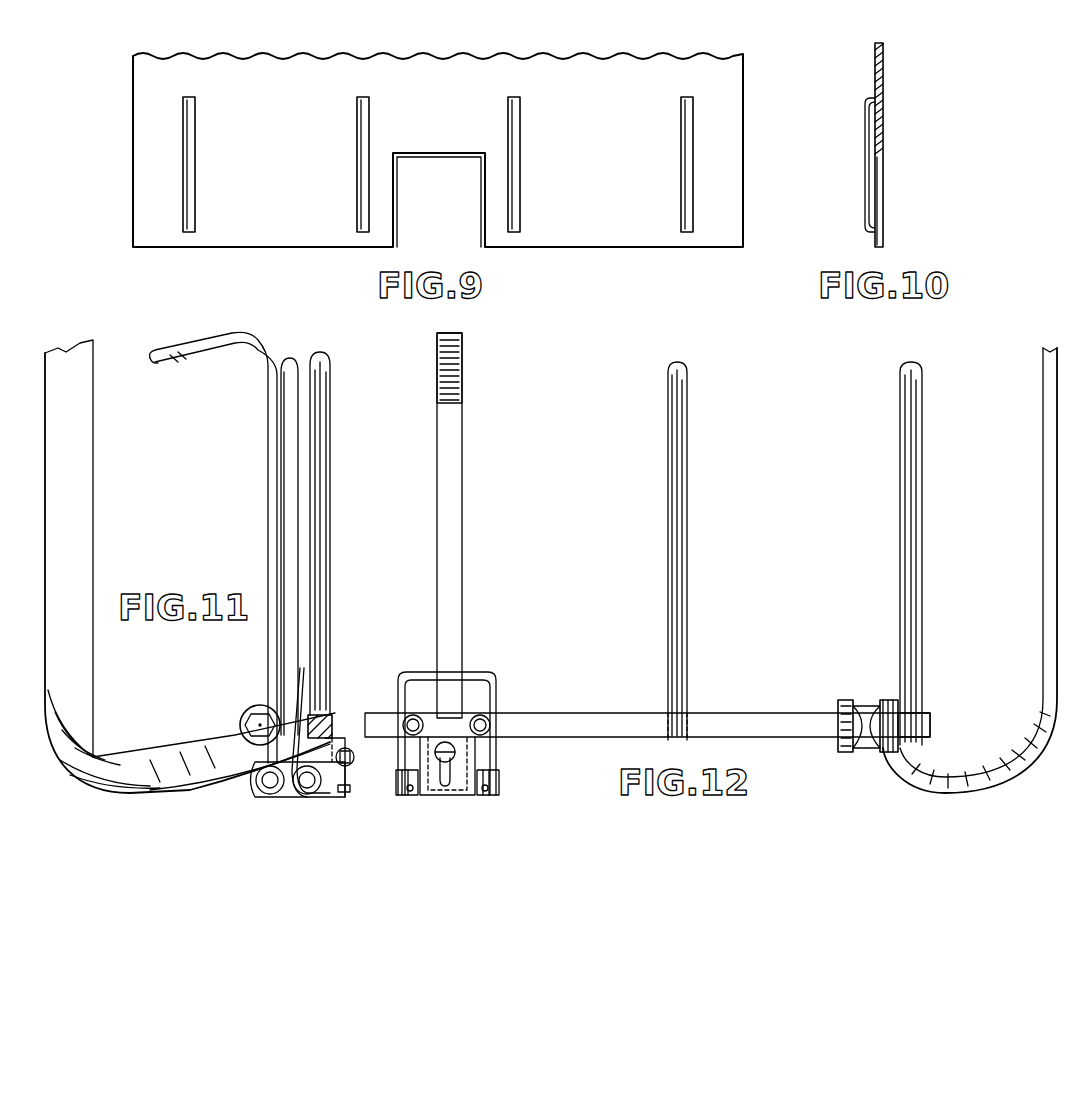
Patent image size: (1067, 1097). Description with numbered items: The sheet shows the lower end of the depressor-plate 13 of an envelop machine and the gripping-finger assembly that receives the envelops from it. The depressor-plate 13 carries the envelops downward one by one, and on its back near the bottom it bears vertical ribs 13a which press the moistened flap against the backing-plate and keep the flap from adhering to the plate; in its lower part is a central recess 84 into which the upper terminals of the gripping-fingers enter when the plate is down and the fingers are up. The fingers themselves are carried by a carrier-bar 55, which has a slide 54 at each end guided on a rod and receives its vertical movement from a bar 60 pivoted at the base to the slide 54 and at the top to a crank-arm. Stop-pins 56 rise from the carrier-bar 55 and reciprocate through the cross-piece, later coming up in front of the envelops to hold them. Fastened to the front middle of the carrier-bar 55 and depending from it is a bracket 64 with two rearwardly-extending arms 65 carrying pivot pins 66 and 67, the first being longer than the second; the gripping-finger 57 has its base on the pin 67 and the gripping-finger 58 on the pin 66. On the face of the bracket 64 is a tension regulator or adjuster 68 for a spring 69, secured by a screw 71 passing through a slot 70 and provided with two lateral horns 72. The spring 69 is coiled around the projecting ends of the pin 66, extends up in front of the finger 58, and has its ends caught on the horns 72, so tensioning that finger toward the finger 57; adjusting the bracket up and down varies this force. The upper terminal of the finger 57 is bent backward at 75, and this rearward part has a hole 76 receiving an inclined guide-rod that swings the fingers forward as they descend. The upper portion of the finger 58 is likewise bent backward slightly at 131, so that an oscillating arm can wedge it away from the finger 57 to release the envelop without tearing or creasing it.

In FIG. 9, the depressor-plate 13 is at (438, 150).
In FIG. 10, the depressor-plate 13 is at (884, 70).
In FIG. 9, the vertical ribs 13a is at (363, 153).
In FIG. 10, the vertical ribs 13a is at (872, 150).
In FIG. 9, the central recess 84 is at (439, 202).
In FIG. 10, the central recess 84 is at (880, 205).
In FIG. 11, the slide 54 is at (262, 708).
In FIG. 12, the slide 54 is at (847, 700).
In FIG. 11, the carrier-bar 55 is at (315, 732).
In FIG. 12, the carrier-bar 55 is at (562, 725).
In FIG. 11, the stop-pins 56 is at (331, 490).
In FIG. 12, the stop-pins 56 is at (905, 540).
In FIG. 11, the gripping-finger 57 is at (268, 457).
In FIG. 12, the gripping-finger 57 is at (478, 368).
In FIG. 11, the gripping-finger 58 is at (292, 495).
In FIG. 12, the gripping-finger 58 is at (447, 352).
In FIG. 11, the bar 60 is at (73, 757).
In FIG. 12, the bar 60 is at (1045, 563).
In FIG. 11, the bracket 64 is at (335, 730).
In FIG. 12, the bracket 64 is at (466, 718).
In FIG. 11, the rearwardly-extending arms 65 is at (275, 782).
In FIG. 11, the pivot pin 66 is at (303, 792).
In FIG. 12, the pivot pin 66 is at (500, 790).
In FIG. 11, the pivot pin 67 is at (270, 788).
In FIG. 11, the tension regulator or adjuster 68 is at (334, 800).
In FIG. 12, the tension regulator or adjuster 68 is at (465, 755).
In FIG. 11, the spring 69 is at (304, 674).
In FIG. 12, the spring 69 is at (470, 672).
In FIG. 12, the slot 70 is at (447, 788).
In FIG. 11, the screw 71 is at (354, 756).
In FIG. 12, the screw 71 is at (433, 750).
In FIG. 11, the lateral horns 72 is at (338, 798).
In FIG. 12, the lateral horns 72 is at (500, 778).
In FIG. 11, the backward bend 75 is at (207, 345).
In FIG. 11, the hole 76 is at (166, 362).
In FIG. 11, the backward bend 131 is at (286, 372).